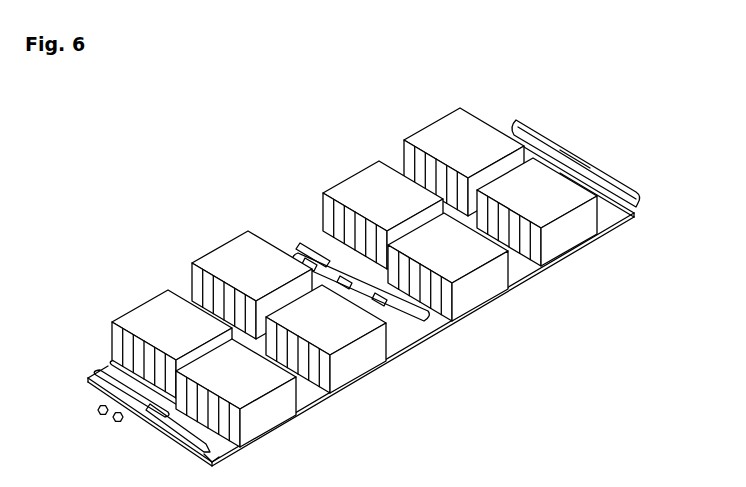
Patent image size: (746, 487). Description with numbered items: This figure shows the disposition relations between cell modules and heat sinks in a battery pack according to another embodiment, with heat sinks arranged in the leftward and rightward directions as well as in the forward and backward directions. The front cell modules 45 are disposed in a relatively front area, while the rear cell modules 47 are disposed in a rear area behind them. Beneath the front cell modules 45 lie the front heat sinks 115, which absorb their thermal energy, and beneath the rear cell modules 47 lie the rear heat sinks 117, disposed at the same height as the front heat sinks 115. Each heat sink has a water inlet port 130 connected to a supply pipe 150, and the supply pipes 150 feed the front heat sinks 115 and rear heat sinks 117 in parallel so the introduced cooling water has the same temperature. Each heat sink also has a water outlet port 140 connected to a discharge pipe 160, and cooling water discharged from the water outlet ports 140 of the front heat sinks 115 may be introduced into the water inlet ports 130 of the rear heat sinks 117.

The front cell modules 45 is at (355, 360).
The rear cell modules 47 is at (486, 286).
The front heat sinks 115 is at (385, 350).
The rear heat sinks 117 is at (600, 206).
The water inlet port 130 is at (98, 390).
The water outlet port 140 is at (514, 126).
The supply pipe 150 is at (165, 428).
The discharge pipe 160 is at (348, 232).